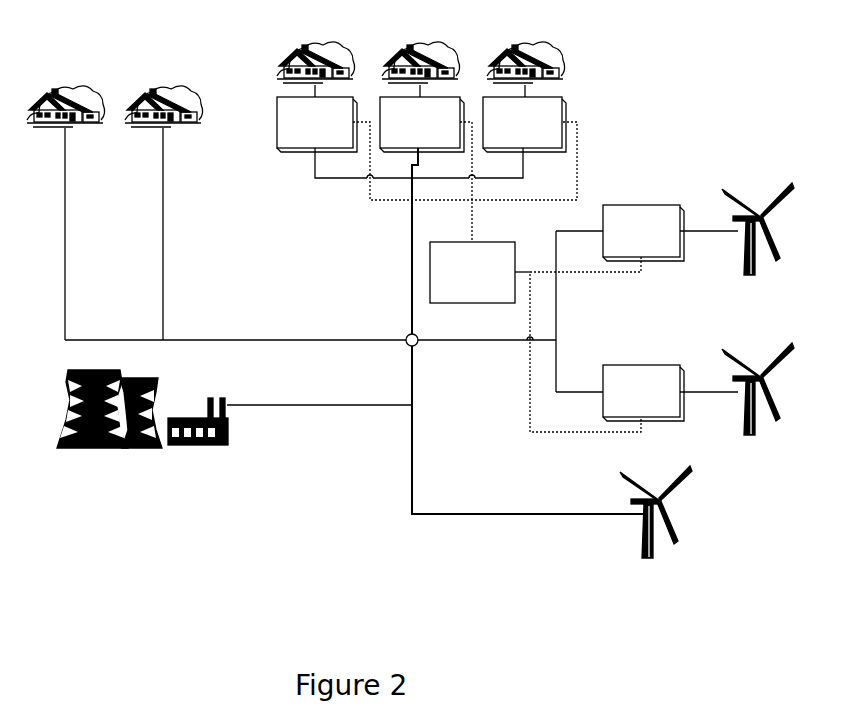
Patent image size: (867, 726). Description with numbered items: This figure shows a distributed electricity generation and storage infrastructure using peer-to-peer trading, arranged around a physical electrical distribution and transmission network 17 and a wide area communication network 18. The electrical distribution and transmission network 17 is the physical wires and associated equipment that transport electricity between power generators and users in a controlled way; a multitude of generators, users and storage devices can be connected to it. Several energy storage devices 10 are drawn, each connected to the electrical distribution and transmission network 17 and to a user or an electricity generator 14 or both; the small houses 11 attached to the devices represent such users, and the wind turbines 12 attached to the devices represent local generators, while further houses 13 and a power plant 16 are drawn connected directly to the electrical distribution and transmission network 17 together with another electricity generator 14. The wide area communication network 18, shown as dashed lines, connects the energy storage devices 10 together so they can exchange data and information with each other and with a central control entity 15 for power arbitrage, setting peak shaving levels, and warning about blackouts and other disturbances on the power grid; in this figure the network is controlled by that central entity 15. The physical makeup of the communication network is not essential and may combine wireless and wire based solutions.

The energy storage device 10 is at (273, 127).
The residential consumer connected to node 11 is at (318, 35).
The wind turbine generator connected to node 12 is at (793, 232).
The residential consumer connected directly to grid 13 is at (65, 80).
The electricity generator 14 is at (658, 562).
The central controller 15 is at (473, 305).
The conventional power plant 16 is at (142, 450).
The electrical distribution and transmission network 17 is at (368, 342).
The wide area communication network 18 is at (527, 436).